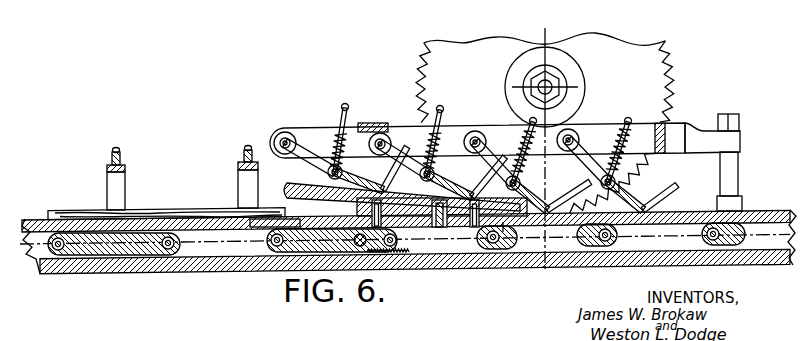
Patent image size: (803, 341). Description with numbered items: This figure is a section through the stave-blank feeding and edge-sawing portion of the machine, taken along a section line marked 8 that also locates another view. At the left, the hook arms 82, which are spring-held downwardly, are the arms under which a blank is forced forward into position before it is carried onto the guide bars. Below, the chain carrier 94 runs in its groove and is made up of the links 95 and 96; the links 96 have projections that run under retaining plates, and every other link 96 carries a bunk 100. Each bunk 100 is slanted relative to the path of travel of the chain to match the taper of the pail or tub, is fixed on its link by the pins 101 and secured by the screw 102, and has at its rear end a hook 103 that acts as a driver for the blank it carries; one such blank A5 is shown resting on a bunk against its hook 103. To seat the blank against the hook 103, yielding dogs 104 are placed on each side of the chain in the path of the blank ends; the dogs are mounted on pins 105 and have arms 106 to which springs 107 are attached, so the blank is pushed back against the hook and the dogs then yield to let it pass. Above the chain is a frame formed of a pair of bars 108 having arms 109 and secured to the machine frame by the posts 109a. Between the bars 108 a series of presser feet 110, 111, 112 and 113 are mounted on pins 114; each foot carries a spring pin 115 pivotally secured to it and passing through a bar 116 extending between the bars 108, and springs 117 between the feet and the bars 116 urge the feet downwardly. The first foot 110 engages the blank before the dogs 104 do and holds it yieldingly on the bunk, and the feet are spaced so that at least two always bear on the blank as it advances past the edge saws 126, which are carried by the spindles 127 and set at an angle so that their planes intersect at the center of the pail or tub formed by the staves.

The section line 8- 8 is at (544, 149).
The hook arms 82 is at (121, 157).
The chain carrier 94 is at (268, 258).
The links 95 is at (108, 251).
The links 96 is at (202, 250).
The bunk 100 is at (443, 224).
The pins 101 is at (417, 220).
The screw 102 is at (433, 222).
The hook 103 is at (291, 185).
The yielding dogs 104 is at (357, 215).
The pins 105 is at (298, 242).
The arms 106 is at (357, 252).
The springs 107 is at (401, 254).
The bars 108 is at (290, 128).
The arms 109 is at (738, 139).
The posts 109a is at (730, 178).
The presser foot 110 is at (307, 133).
The presser foot 111 is at (396, 135).
The presser foot 112 is at (478, 130).
The presser foot 113 is at (586, 150).
The pins 114 is at (275, 130).
The spring pin 115 is at (344, 107).
The bar 116 is at (330, 126).
The springs 117 is at (450, 125).
The edge saws 126 is at (585, 43).
The spindles 127 is at (556, 82).
The blank A5 is at (503, 222).